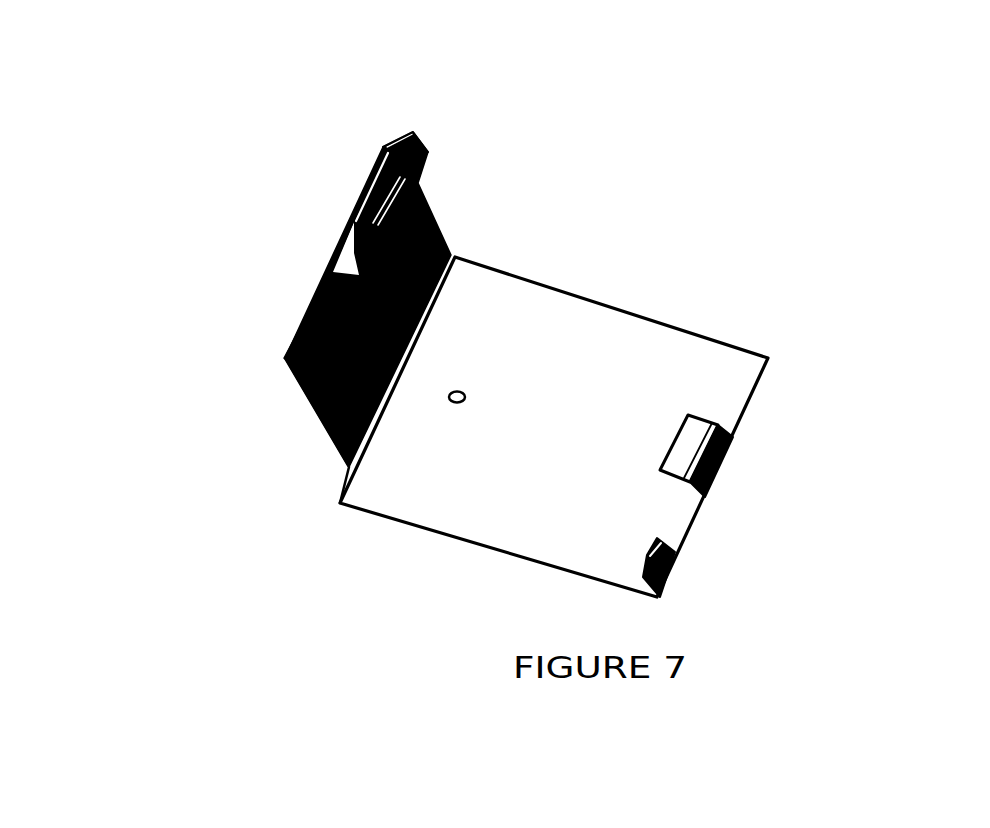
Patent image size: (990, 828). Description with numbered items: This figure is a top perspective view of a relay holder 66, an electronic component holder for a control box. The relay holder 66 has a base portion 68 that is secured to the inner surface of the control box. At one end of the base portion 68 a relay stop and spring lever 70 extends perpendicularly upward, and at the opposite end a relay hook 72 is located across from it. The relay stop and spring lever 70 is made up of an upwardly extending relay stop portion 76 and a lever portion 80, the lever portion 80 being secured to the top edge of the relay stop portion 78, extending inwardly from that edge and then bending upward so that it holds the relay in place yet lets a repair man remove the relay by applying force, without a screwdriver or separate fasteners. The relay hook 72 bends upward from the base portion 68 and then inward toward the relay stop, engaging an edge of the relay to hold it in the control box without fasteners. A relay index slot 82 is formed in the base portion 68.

The relay holder 66 is at (848, 323).
The base portion 68 is at (575, 507).
The relay stop and spring lever 70 is at (222, 357).
The relay hook 72 is at (727, 462).
The upwardly extending relay stop portion 76 is at (308, 400).
The top edge of relay stop portion 78 is at (323, 285).
The lever portion 80 is at (385, 148).
The relay index slot 82 is at (455, 403).